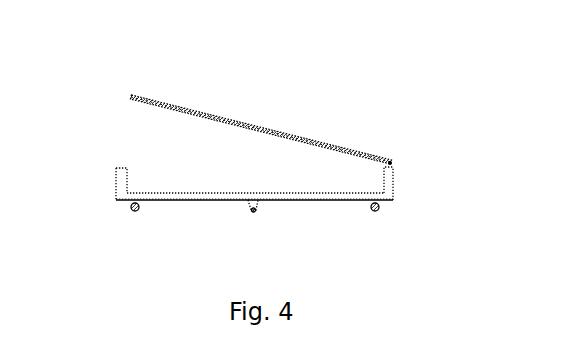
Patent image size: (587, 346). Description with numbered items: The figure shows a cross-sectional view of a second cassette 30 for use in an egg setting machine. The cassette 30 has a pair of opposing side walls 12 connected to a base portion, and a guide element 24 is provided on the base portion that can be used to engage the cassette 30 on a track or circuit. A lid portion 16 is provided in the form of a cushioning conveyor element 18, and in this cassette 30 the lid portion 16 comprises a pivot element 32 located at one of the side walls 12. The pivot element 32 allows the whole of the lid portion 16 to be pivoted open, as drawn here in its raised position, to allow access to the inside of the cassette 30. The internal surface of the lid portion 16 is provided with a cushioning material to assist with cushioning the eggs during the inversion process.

The side walls 12 is at (117, 182).
The lid portion 16 is at (238, 123).
The cushioning conveyor element 18 is at (310, 195).
The guide element 24 is at (253, 212).
The cassette 30 is at (384, 116).
The pivot element 32 is at (392, 165).